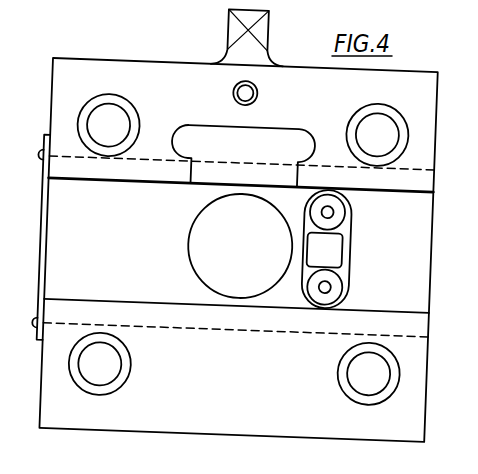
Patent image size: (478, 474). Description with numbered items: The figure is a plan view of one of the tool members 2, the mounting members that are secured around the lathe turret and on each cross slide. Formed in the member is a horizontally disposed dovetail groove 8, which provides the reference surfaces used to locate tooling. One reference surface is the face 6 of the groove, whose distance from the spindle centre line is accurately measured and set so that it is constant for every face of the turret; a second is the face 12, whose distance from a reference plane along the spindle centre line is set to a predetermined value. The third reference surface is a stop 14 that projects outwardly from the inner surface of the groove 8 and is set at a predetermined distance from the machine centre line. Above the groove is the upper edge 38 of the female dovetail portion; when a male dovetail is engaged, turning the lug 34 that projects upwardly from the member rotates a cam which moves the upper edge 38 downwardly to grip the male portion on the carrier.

The tool member 2 is at (103, 70).
The lug 34 is at (263, 34).
The upper edge of the female dovetail portion 38 is at (243, 155).
The dovetail groove 8 is at (238, 245).
The stop 14 is at (315, 242).
The face of the dovetail groove 6 is at (145, 313).
The face 12 is at (234, 369).